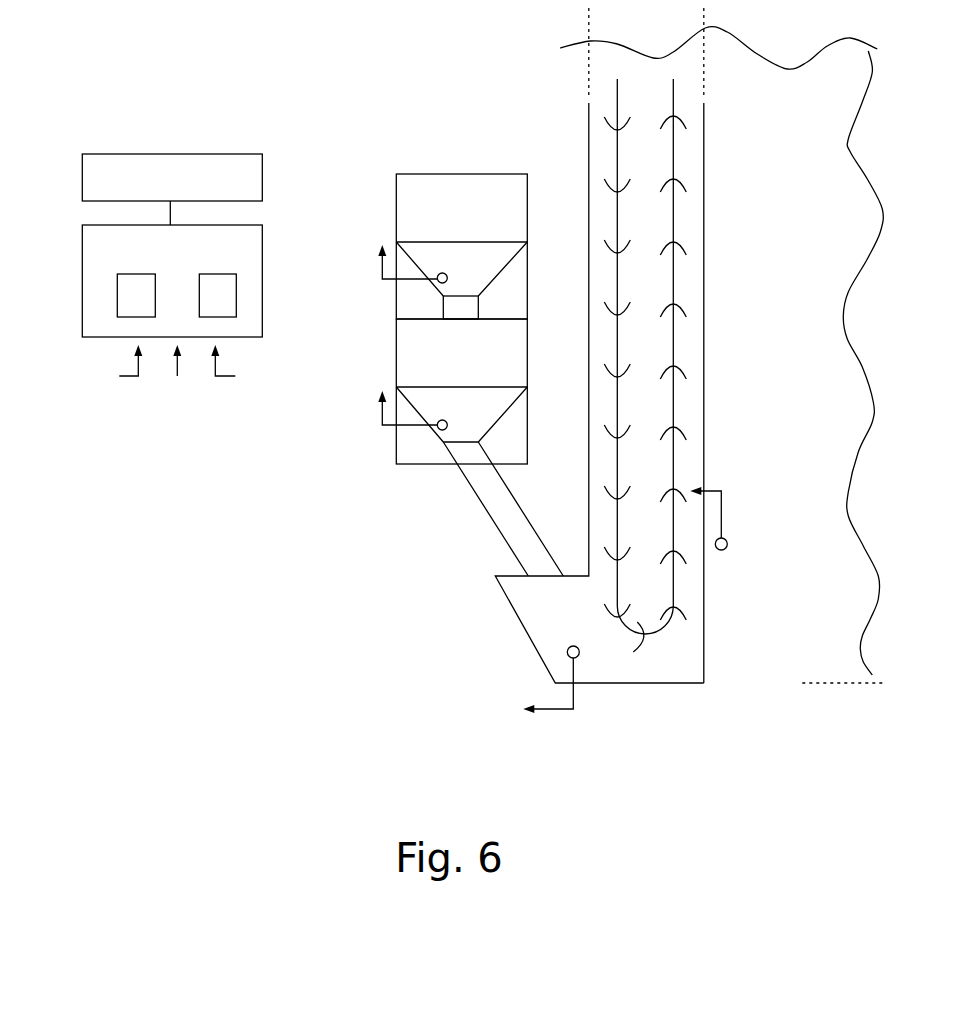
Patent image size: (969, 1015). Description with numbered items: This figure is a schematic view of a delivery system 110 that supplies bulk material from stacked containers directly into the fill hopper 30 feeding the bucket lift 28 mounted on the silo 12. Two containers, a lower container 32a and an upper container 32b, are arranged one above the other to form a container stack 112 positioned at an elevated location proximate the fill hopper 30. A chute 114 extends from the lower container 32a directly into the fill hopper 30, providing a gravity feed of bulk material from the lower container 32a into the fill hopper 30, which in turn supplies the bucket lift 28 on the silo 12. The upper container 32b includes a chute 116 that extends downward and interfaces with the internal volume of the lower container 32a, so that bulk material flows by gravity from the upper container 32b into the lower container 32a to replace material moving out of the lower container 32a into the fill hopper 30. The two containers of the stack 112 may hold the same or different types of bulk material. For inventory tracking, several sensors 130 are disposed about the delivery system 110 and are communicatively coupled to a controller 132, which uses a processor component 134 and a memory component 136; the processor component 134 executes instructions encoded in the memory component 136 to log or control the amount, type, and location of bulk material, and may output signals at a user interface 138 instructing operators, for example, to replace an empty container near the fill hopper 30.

The silo 12 is at (793, 314).
The bucket lift 28 is at (637, 163).
The fill hopper 30 is at (538, 620).
The lower container 32a is at (396, 352).
The upper container 32b is at (396, 205).
The delivery system 110 is at (448, 321).
The container stack 112 is at (360, 266).
The chute 114 is at (498, 517).
The chute 116 is at (478, 311).
The sensor 130 is at (446, 275).
The controller 132 is at (262, 253).
The processor component 134 is at (117, 297).
The memory component 136 is at (236, 293).
The user interface 138 is at (82, 180).